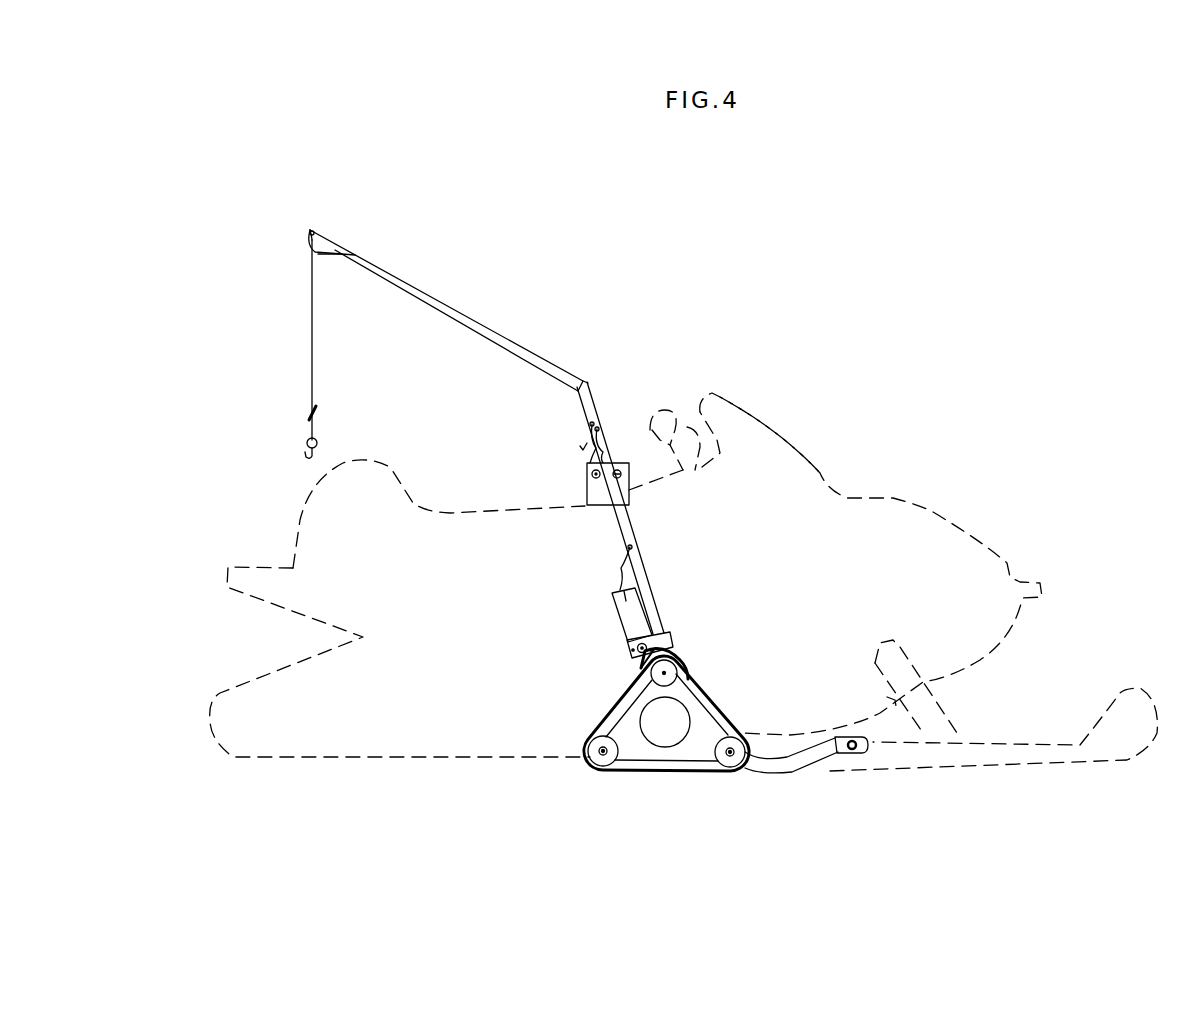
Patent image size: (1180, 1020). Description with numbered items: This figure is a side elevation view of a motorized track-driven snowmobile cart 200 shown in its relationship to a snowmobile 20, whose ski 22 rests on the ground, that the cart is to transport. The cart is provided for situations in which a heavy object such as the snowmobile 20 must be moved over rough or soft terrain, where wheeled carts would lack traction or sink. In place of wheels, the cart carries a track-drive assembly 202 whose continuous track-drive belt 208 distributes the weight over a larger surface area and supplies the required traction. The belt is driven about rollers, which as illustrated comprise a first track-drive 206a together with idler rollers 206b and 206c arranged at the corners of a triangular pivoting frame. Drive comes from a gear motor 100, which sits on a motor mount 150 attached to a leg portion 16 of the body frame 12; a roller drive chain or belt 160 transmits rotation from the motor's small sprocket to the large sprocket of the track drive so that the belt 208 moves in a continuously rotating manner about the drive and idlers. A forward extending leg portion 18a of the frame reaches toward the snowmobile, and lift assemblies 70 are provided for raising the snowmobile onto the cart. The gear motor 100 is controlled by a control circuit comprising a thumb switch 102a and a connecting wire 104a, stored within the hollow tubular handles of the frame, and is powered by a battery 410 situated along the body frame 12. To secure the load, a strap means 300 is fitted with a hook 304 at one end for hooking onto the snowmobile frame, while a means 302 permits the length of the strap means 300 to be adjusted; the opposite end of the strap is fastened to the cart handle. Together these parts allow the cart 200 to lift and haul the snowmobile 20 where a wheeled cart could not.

The body frame 12 is at (462, 290).
The leg portions 16 is at (668, 552).
The forward extending leg portion 18a is at (835, 760).
The snowmobile 20 is at (438, 648).
The ski 22 is at (950, 756).
The lift assemblies 70 is at (870, 750).
The gear motor 100 is at (612, 617).
The thumb switch 102a is at (310, 230).
The wire 104a is at (328, 250).
The motor mount 150 is at (670, 632).
The roller drive chain or belt 160 is at (640, 663).
The track-driven snowmobile cart 200 is at (675, 334).
The track-drive assembly 202 is at (649, 734).
The first track-drive 206a is at (688, 676).
The track idler roller 206b is at (743, 768).
The front wheel 206c is at (597, 762).
The continuous track-drive belt 208 is at (717, 705).
The strap means 300 is at (308, 318).
The means to adjust strap means length 302 is at (310, 416).
The hook 304 is at (305, 458).
The battery 410 is at (587, 480).